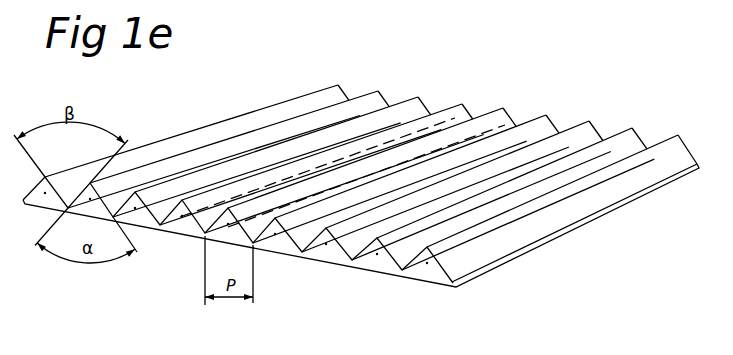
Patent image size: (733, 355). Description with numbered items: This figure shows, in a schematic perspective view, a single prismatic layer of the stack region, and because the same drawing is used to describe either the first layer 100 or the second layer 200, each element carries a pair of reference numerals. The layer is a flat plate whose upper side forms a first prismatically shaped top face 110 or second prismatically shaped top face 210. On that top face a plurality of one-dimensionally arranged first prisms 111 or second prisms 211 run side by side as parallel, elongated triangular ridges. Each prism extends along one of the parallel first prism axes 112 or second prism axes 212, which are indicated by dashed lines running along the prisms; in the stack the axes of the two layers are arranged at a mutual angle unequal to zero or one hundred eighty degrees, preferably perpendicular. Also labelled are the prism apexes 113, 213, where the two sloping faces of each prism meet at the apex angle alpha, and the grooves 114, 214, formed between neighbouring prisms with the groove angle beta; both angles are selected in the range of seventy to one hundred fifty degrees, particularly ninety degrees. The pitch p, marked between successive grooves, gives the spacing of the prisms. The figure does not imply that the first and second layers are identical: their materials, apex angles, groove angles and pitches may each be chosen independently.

The first layer 100 is at (361, 228).
The second layer 200 is at (520, 262).
The first prismatically shaped top face 110 is at (368, 198).
The second prismatically shaped top face 210 is at (368, 198).
The first prisms 111 is at (238, 248).
The second prisms 211 is at (333, 250).
The first prism axes 112 is at (342, 142).
The second prism axes 212 is at (433, 152).
The prism ridge 113 is at (361, 149).
The prism ridge 213 is at (293, 114).
The prism valley 114 is at (361, 231).
The prism valley 214 is at (405, 270).